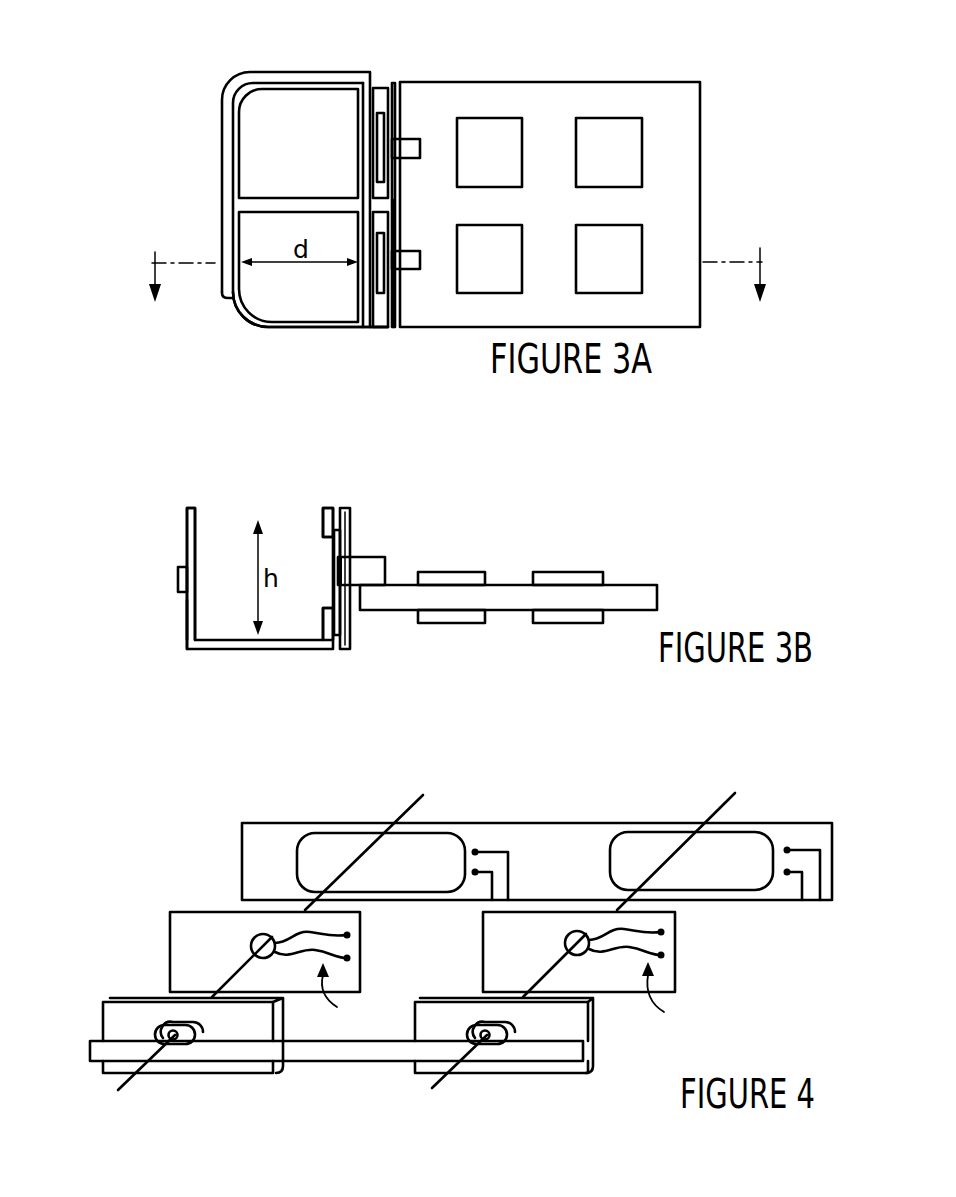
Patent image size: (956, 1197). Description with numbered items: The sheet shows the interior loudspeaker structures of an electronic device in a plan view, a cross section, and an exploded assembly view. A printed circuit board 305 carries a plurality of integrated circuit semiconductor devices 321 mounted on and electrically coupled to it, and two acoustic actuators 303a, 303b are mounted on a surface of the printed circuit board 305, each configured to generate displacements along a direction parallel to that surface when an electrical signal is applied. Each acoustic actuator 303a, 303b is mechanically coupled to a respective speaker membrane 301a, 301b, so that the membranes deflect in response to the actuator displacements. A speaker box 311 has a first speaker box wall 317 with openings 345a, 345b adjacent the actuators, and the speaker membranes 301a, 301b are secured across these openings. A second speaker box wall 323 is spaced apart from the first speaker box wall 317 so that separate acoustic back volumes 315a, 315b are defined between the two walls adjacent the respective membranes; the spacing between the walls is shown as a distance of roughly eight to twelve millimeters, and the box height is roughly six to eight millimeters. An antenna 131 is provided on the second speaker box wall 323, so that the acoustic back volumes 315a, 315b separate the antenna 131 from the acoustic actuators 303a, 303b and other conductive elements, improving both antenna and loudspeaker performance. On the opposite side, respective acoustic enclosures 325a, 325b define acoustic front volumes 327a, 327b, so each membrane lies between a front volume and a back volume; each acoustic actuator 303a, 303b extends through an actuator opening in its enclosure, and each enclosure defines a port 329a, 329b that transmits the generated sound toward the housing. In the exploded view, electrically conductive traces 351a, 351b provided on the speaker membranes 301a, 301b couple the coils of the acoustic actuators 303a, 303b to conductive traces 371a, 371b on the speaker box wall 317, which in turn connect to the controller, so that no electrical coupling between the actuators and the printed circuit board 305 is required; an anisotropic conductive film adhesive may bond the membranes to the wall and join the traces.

In FIG. 3A, the antenna 131 is at (266, 72).
In FIG. 3B, the antenna 131 is at (178, 578).
In FIG. 3A, the speaker membrane 301a is at (378, 120).
In FIG. 4, the speaker membrane 301a is at (677, 943).
In FIG. 3A, the speaker membrane 301b is at (378, 235).
In FIG. 3B, the speaker membrane 301b is at (336, 552).
In FIG. 4, the speaker membrane 301b is at (170, 944).
In FIG. 3A, the acoustic actuator 303a is at (407, 137).
In FIG. 4, the acoustic actuator 303a is at (510, 1024).
In FIG. 3A, the acoustic actuator 303b is at (412, 270).
In FIG. 3B, the acoustic actuator 303b is at (368, 556).
In FIG. 4, the acoustic actuator 303b is at (193, 1026).
In FIG. 3A, the printed circuit board 305 is at (650, 95).
In FIG. 3B, the printed circuit board 305 is at (658, 597).
In FIG. 4, the printed circuit board 305 is at (355, 1053).
In FIG. 3A, the speaker box 311 is at (303, 330).
In FIG. 3B, the speaker box 311 is at (250, 650).
In FIG. 3A, the acoustic back volume 315a is at (323, 171).
In FIG. 3A, the acoustic back volume 315b is at (326, 294).
In FIG. 3B, the acoustic back volume 315b is at (225, 525).
In FIG. 3B, the first speaker box wall 317 is at (322, 520).
In FIG. 4, the first speaker box wall 317 is at (833, 853).
In FIG. 3A, the integrated circuit semiconductor devices 321 is at (505, 164).
In FIG. 3B, the integrated circuit semiconductor devices 321 is at (452, 572).
In FIG. 3A, the second speaker box wall 323 is at (236, 303).
In FIG. 3B, the second speaker box wall 323 is at (184, 603).
In FIG. 3A, the acoustic enclosure 325a is at (374, 86).
In FIG. 4, the acoustic enclosure 325a is at (595, 1018).
In FIG. 3A, the acoustic enclosure 325b is at (377, 330).
In FIG. 4, the acoustic enclosure 325b is at (102, 1022).
In FIG. 3A, the acoustic front volume 327a is at (394, 100).
In FIG. 3A, the acoustic front volume 327b is at (388, 305).
In FIG. 4, the port 329a is at (450, 998).
In FIG. 3B, the port 329b is at (341, 506).
In FIG. 4, the port 329b is at (135, 997).
In FIG. 4, the opening 345a is at (743, 848).
In FIG. 4, the opening 345b is at (430, 848).
In FIG. 4, the electrically conductive traces 351a is at (675, 994).
In FIG. 4, the electrically conductive traces 351b is at (351, 993).
In FIG. 4, the conductive traces 371a is at (524, 876).
In FIG. 4, the conductive traces 371b is at (812, 878).